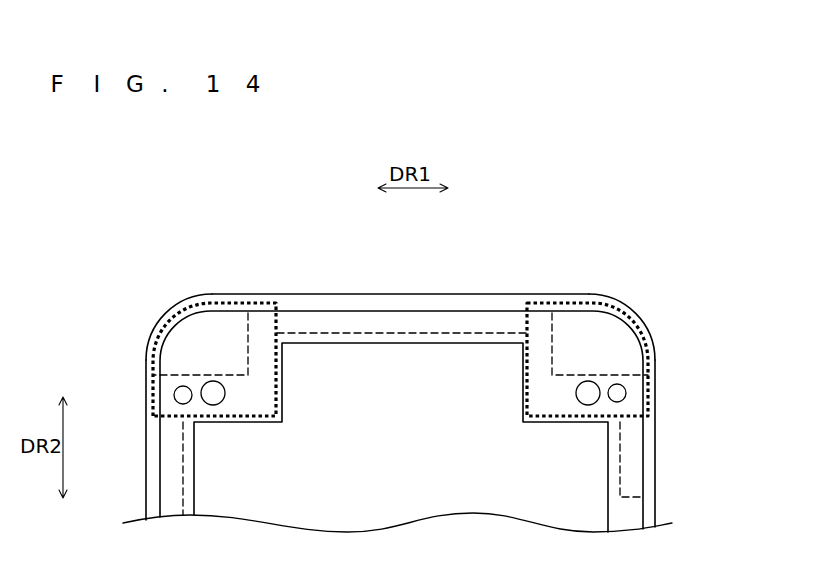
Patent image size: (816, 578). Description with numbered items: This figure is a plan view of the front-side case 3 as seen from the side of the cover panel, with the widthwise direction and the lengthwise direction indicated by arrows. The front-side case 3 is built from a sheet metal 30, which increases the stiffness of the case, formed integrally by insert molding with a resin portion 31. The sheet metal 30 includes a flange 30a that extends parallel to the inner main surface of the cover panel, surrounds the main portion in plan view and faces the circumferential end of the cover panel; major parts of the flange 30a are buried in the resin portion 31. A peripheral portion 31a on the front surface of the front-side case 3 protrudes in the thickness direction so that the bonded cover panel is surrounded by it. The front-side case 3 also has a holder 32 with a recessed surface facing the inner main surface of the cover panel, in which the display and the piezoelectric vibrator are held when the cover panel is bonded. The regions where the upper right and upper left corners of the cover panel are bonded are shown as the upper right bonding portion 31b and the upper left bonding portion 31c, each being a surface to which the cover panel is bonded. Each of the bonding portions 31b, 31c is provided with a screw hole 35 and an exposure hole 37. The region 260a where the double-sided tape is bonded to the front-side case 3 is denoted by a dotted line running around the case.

The front-side case 3 is at (397, 246).
The sheet metal 30 is at (453, 350).
The flange 30a is at (183, 395).
The resin portion 31 is at (413, 298).
The peripheral portion 31a is at (511, 298).
The upper right bonding portion 31b is at (619, 310).
The upper left bonding portion 31c is at (189, 310).
The holder 32 is at (341, 365).
The screw hole 35 is at (218, 404).
The exposure hole 37 is at (176, 389).
The region where the double-sided tape is bonded 260a is at (643, 493).